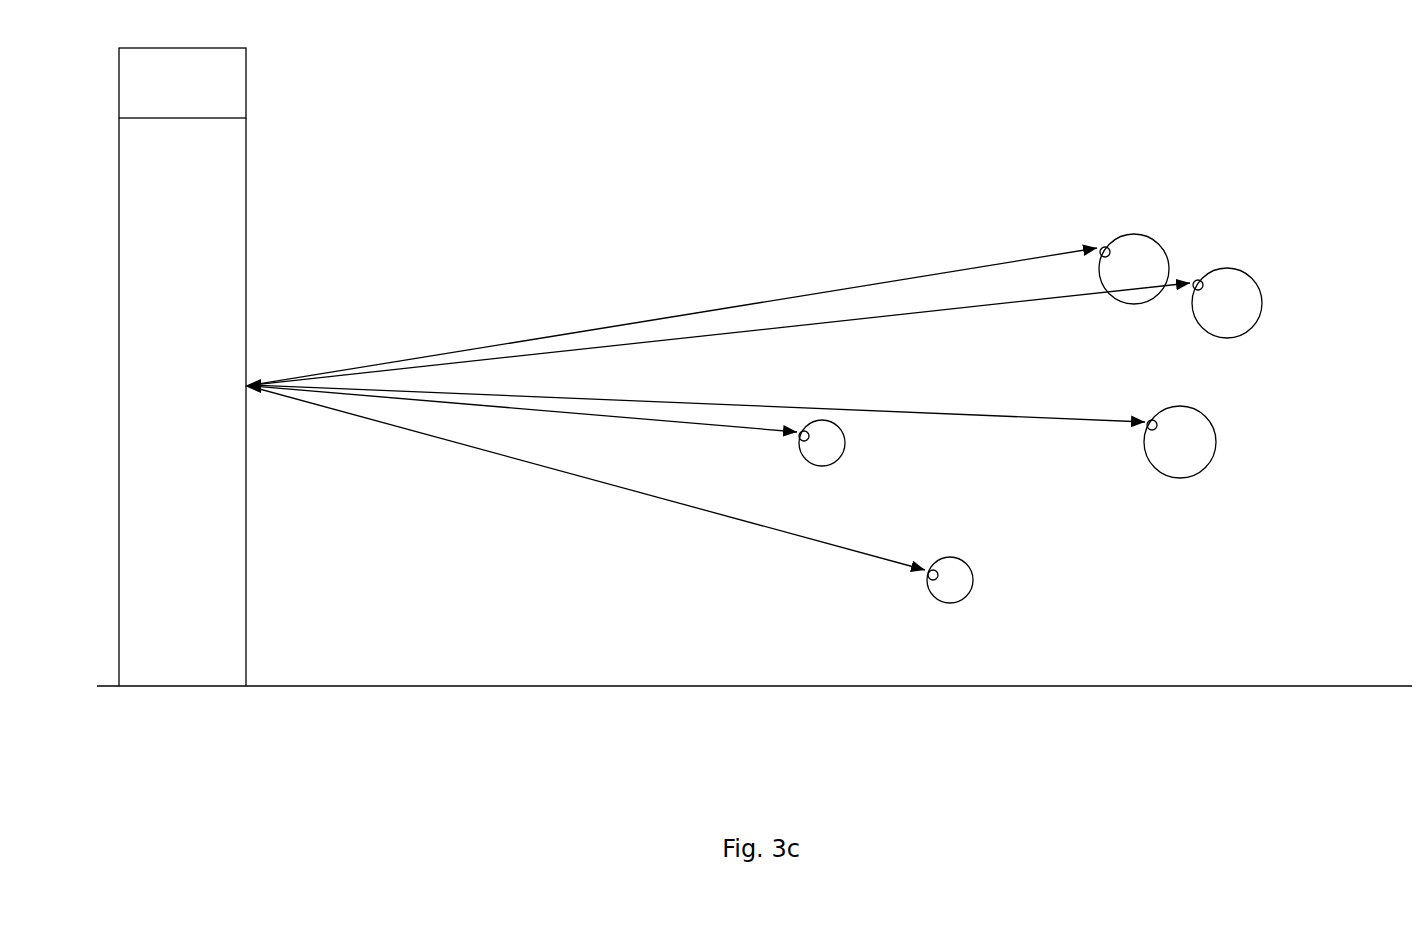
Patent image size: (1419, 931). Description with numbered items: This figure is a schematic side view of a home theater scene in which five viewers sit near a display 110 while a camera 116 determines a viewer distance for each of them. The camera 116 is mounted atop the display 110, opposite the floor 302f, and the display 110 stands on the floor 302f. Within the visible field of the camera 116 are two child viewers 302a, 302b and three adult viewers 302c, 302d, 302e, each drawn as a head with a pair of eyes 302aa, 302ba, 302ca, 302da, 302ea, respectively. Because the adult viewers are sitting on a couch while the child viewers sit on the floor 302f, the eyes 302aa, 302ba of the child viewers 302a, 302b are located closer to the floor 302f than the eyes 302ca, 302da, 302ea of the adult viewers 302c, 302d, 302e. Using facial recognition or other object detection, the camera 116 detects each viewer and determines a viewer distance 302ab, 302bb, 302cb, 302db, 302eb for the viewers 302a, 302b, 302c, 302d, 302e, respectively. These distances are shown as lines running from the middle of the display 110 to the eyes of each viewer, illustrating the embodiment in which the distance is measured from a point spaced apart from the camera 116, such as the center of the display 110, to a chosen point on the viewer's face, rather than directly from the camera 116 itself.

The camera 116 is at (202, 112).
The display 110 is at (162, 429).
The child viewer 302a is at (973, 580).
The eyes 302aa is at (928, 582).
The viewer distance 302ab is at (625, 488).
The child viewer 302b is at (847, 443).
The eyes 302ba is at (797, 440).
The viewer distance 302bb is at (543, 410).
The adult viewer 302c is at (1217, 442).
The eyes 302ca is at (1147, 430).
The viewer distance 302cb is at (800, 407).
The adult viewer 302d is at (1262, 303).
The eyes 302da is at (1192, 292).
The viewer distance 302db is at (857, 317).
The adult viewer 302e is at (1168, 258).
The eyes 302ea is at (1110, 247).
The viewer distance 302eb is at (960, 268).
The floor 302f is at (1300, 686).